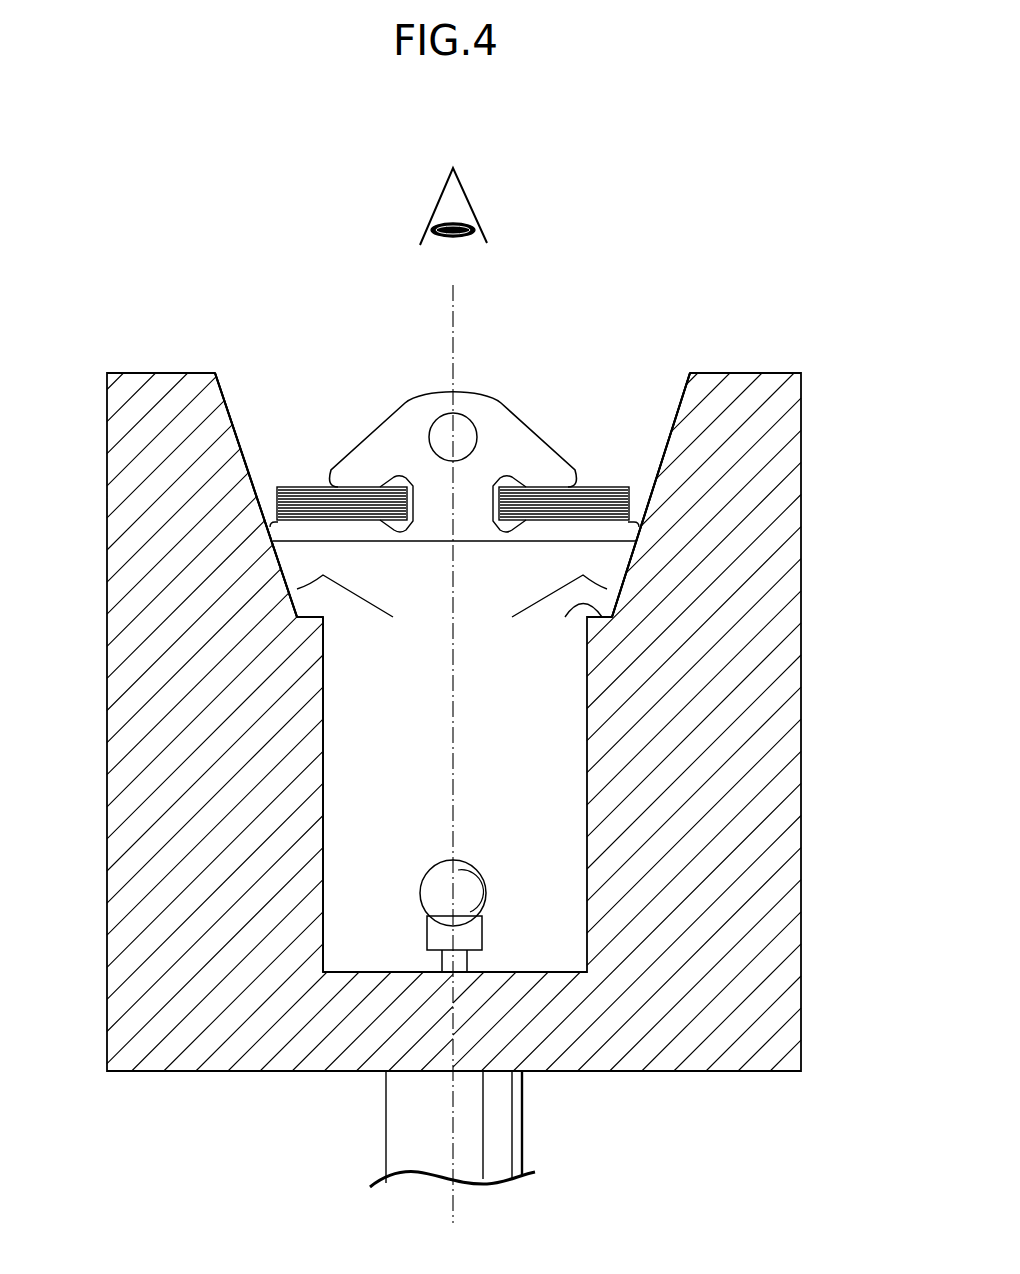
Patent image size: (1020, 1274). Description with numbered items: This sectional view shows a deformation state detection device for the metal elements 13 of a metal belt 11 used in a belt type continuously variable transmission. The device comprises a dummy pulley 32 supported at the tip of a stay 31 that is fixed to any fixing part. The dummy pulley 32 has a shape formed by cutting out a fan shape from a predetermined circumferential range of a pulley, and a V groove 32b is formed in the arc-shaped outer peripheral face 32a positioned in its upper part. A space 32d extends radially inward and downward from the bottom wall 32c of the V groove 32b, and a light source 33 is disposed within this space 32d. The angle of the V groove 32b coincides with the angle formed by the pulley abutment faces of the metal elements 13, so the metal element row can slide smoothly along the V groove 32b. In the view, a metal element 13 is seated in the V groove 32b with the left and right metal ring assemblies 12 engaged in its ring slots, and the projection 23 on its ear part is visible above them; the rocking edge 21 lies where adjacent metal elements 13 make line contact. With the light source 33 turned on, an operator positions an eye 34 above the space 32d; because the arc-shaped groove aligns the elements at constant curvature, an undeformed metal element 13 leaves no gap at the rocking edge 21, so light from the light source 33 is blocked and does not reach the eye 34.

The metal belt 11 is at (454, 462).
The metal ring assembly 12 is at (307, 490).
The metal element 13 is at (386, 421).
The rocking edge 21 is at (477, 542).
The projection 23 is at (460, 432).
The stay 31 is at (397, 1123).
The dummy pulley 32 is at (152, 370).
The arc-shaped outer peripheral face 32a is at (180, 372).
The V groove 32b is at (240, 432).
The bottom wall 32c is at (573, 605).
The space 32d is at (327, 665).
The light source 33 is at (485, 883).
The eye 34 is at (447, 195).